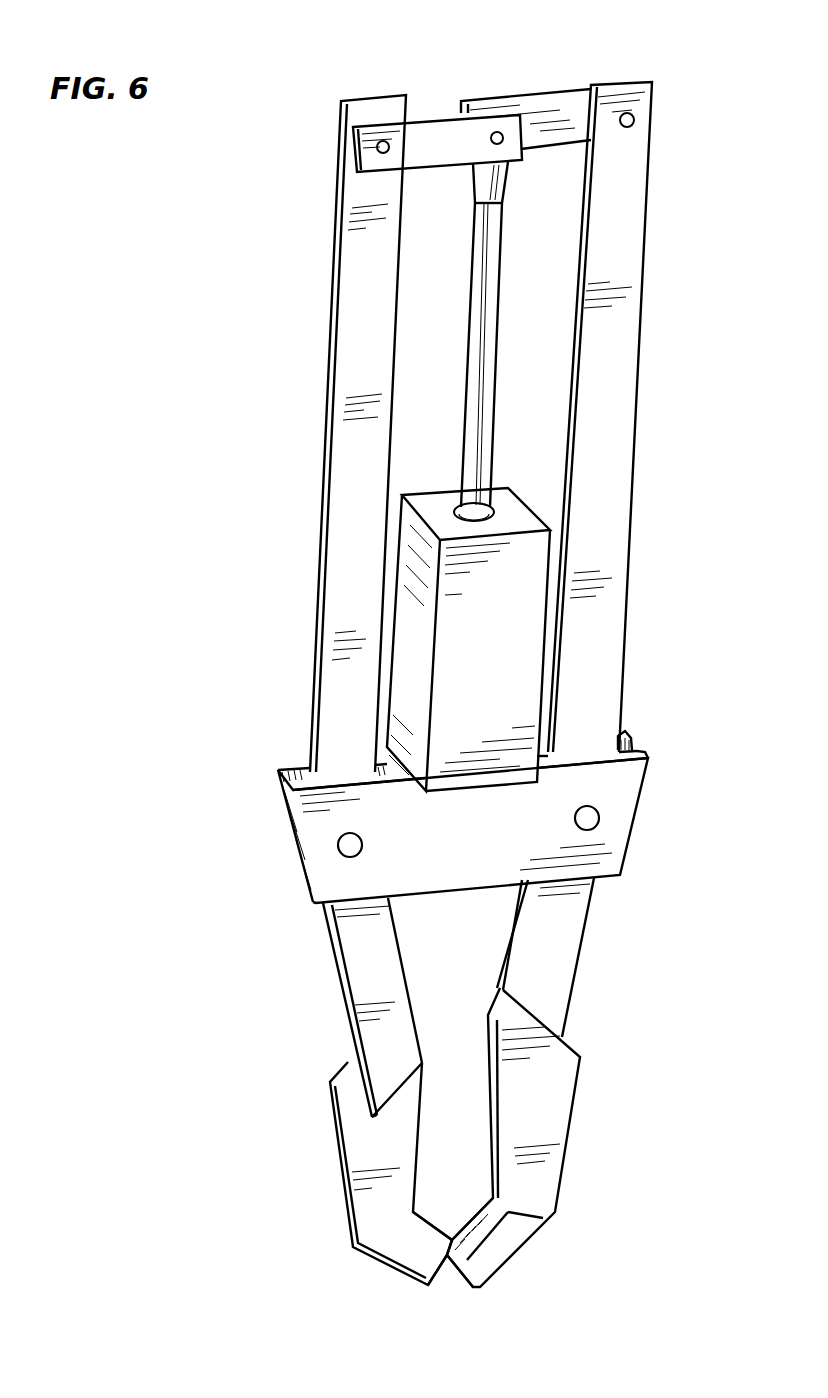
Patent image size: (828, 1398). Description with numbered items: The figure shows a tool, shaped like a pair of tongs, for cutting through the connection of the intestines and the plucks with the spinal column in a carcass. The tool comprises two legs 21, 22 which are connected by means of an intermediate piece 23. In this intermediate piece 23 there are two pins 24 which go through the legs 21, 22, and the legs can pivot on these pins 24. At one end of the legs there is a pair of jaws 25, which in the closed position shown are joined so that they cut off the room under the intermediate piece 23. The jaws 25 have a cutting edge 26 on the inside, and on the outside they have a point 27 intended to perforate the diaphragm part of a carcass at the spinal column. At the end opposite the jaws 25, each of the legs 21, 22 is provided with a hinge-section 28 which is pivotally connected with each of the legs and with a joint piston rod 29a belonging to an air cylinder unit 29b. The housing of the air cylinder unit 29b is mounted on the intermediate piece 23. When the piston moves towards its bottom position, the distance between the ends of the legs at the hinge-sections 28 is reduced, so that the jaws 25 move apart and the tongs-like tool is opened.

The leg 21 is at (348, 427).
The leg 22 is at (615, 437).
The intermediate piece 23 is at (627, 803).
The pin 24 is at (340, 850).
The jaw 25 is at (400, 1243).
The cutting edge 26 is at (477, 1220).
The point 27 is at (477, 1290).
The hinge-section 28 is at (435, 133).
The piston rod 29a is at (490, 322).
The air cylinder unit 29b is at (510, 517).